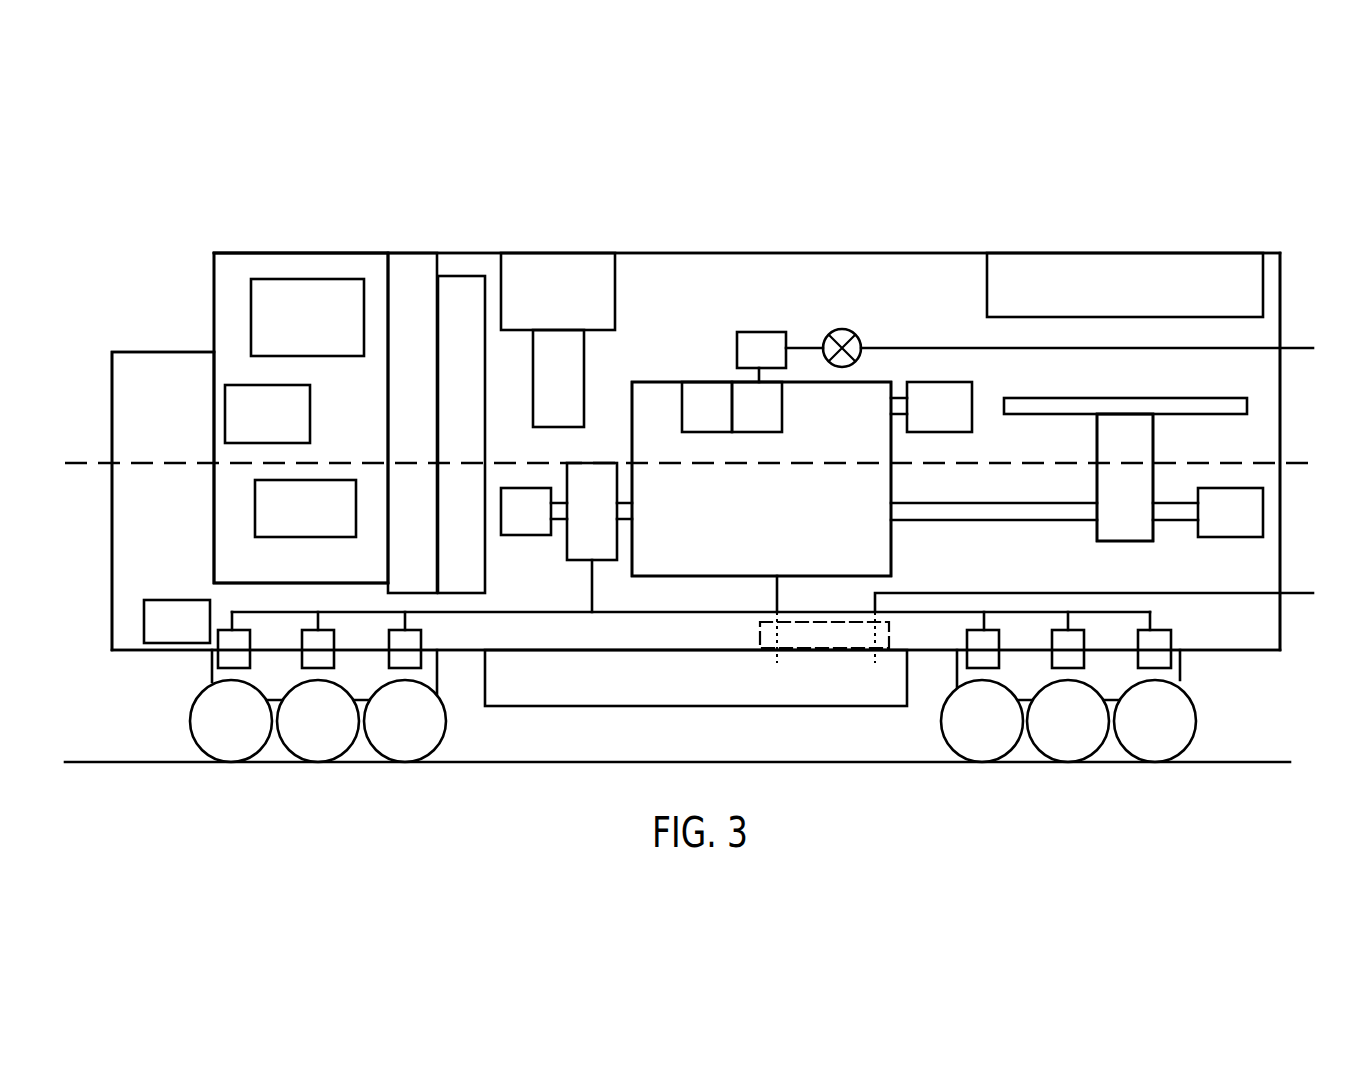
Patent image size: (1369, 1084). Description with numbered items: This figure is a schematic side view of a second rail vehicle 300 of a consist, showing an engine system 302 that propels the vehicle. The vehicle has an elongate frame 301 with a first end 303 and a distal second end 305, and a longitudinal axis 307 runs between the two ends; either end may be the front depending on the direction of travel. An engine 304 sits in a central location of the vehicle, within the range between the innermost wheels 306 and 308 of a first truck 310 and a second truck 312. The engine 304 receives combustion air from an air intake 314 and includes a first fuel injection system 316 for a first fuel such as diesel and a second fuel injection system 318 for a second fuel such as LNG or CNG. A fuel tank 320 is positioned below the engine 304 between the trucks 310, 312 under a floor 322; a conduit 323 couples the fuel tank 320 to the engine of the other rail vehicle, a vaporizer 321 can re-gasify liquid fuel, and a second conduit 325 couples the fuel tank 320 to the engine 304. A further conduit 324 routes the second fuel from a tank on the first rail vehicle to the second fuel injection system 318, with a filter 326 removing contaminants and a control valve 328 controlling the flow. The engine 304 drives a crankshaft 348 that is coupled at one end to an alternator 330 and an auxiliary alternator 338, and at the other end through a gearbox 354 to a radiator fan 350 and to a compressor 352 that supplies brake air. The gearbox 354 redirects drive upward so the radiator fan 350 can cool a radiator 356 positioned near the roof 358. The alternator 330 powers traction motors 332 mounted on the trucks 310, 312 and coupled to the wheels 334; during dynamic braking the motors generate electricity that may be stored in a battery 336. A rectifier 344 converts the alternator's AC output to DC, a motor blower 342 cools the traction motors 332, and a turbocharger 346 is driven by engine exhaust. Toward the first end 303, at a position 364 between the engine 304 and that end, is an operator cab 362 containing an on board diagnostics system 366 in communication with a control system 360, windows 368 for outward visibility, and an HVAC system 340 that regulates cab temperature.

The second rail vehicle 300 is at (952, 186).
The elongate frame 301 is at (1274, 250).
The engine system 302 is at (646, 350).
The first end 303 is at (98, 396).
The engine 304 is at (761, 479).
The second end 305 is at (1307, 428).
The innermost wheel of first truck 306 is at (437, 750).
The longitudinal axis 307 is at (106, 461).
The innermost wheel of second truck 308 is at (952, 752).
The first truck 310 is at (211, 656).
The second truck 312 is at (1181, 667).
The air intake 314 is at (558, 291).
The first fuel injection system 316 is at (707, 407).
The second fuel injection system 318 is at (757, 407).
The fuel tank 320 is at (696, 678).
The vaporizer 321 is at (824, 635).
The floor 322 is at (1192, 649).
The conduit 323 is at (958, 592).
The conduit 324 is at (912, 347).
The second conduit 325 is at (778, 603).
The filter 326 is at (762, 331).
The control valve 328 is at (843, 329).
The alternator 330 is at (599, 537).
The traction motors 332 is at (424, 645).
The wheels 334 is at (313, 763).
The battery 336 is at (177, 621).
The auxiliary alternator 338 is at (534, 511).
The HVAC system 340 is at (305, 508).
The motor blower 342 is at (558, 378).
The rectifier 344 is at (461, 434).
The turbocharger 346 is at (931, 407).
The crankshaft 348 is at (958, 502).
The radiator fan 350 is at (1119, 397).
The compressor 352 is at (1230, 512).
The gearbox 354 is at (1125, 477).
The radiator 356 is at (1125, 285).
The roof 358 is at (683, 255).
The control system 360 is at (412, 423).
The operator cab 362 is at (297, 252).
The position 364 is at (200, 432).
The on board diagnostics system 366 is at (267, 414).
The windows 368 is at (309, 358).